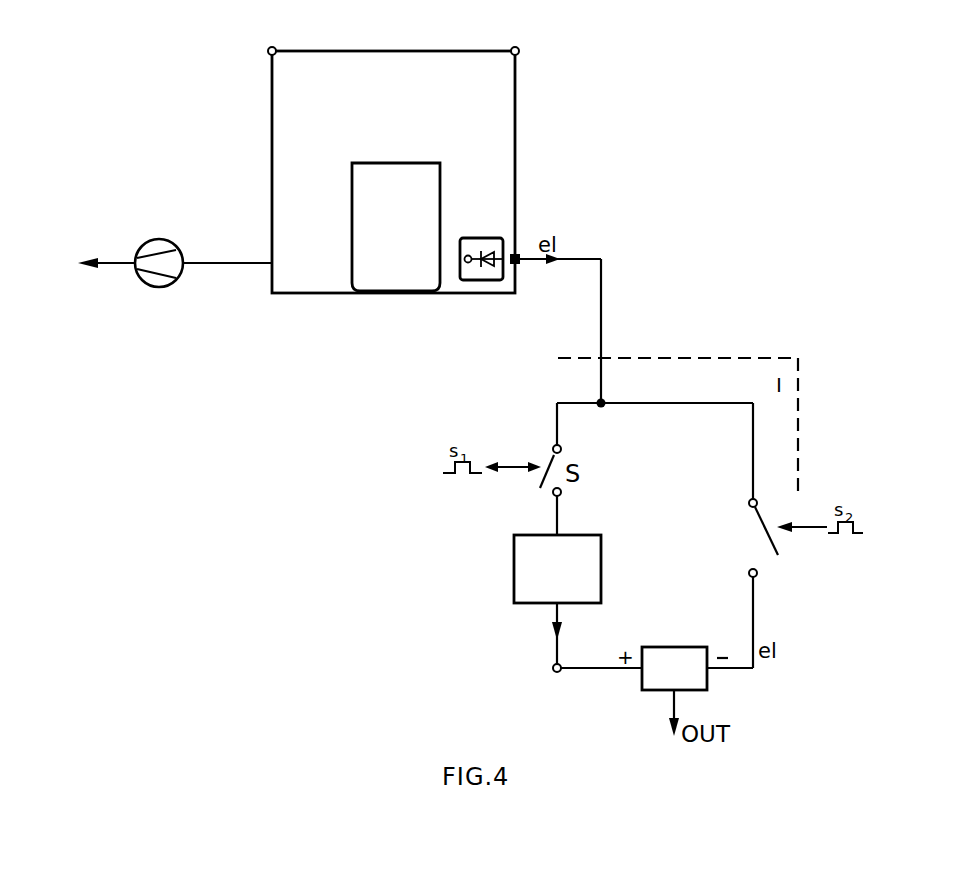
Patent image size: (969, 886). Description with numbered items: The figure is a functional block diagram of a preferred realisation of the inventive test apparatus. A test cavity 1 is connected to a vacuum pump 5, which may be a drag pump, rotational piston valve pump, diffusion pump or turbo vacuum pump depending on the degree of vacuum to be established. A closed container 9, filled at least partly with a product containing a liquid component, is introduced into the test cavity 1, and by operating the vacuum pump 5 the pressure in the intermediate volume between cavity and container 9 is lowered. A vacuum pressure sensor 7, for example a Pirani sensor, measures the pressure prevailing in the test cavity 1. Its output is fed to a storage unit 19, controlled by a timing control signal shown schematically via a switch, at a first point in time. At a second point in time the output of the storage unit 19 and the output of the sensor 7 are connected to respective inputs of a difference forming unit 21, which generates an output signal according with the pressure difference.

The test cavity 1 is at (340, 50).
The vacuum pump 5 is at (158, 287).
The vacuum pressure sensor 7 is at (480, 280).
The closed container 9 is at (352, 205).
The storage unit 19 is at (514, 567).
The difference forming unit 21 is at (672, 645).